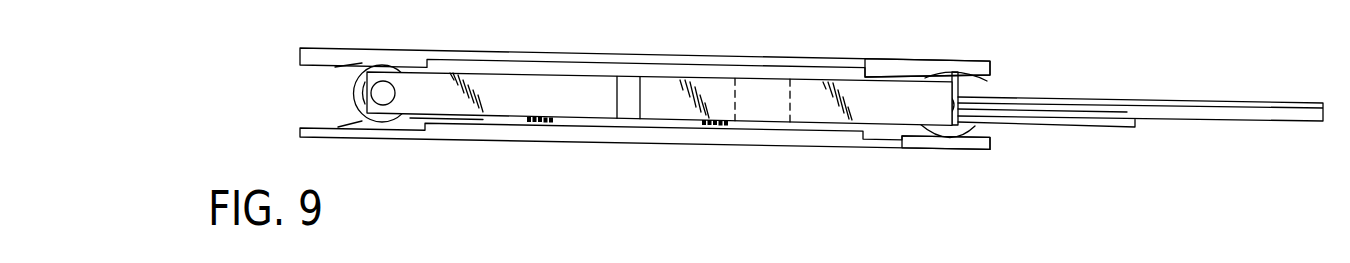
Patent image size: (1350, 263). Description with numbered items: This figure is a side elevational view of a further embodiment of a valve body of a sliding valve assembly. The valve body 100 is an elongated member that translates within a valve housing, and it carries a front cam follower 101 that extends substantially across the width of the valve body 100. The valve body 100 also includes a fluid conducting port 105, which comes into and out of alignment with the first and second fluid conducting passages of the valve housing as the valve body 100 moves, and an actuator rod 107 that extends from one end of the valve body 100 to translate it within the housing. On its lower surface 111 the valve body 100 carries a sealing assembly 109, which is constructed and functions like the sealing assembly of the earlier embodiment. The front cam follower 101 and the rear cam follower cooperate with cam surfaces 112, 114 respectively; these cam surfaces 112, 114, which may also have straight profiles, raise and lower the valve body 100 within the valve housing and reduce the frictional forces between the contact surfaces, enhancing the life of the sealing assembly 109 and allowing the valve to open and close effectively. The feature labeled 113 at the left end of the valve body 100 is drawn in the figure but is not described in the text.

The valve body 100 is at (792, 97).
The front cam follower 101 is at (988, 78).
The fluid conducting port 105 is at (763, 88).
The actuator rod 107 is at (1218, 101).
The sealing assembly 109 is at (662, 112).
The lower surface 111 is at (483, 117).
The cam surface 112 is at (349, 70).
The pivot pin 113 is at (353, 95).
The cam surface 114 is at (905, 72).